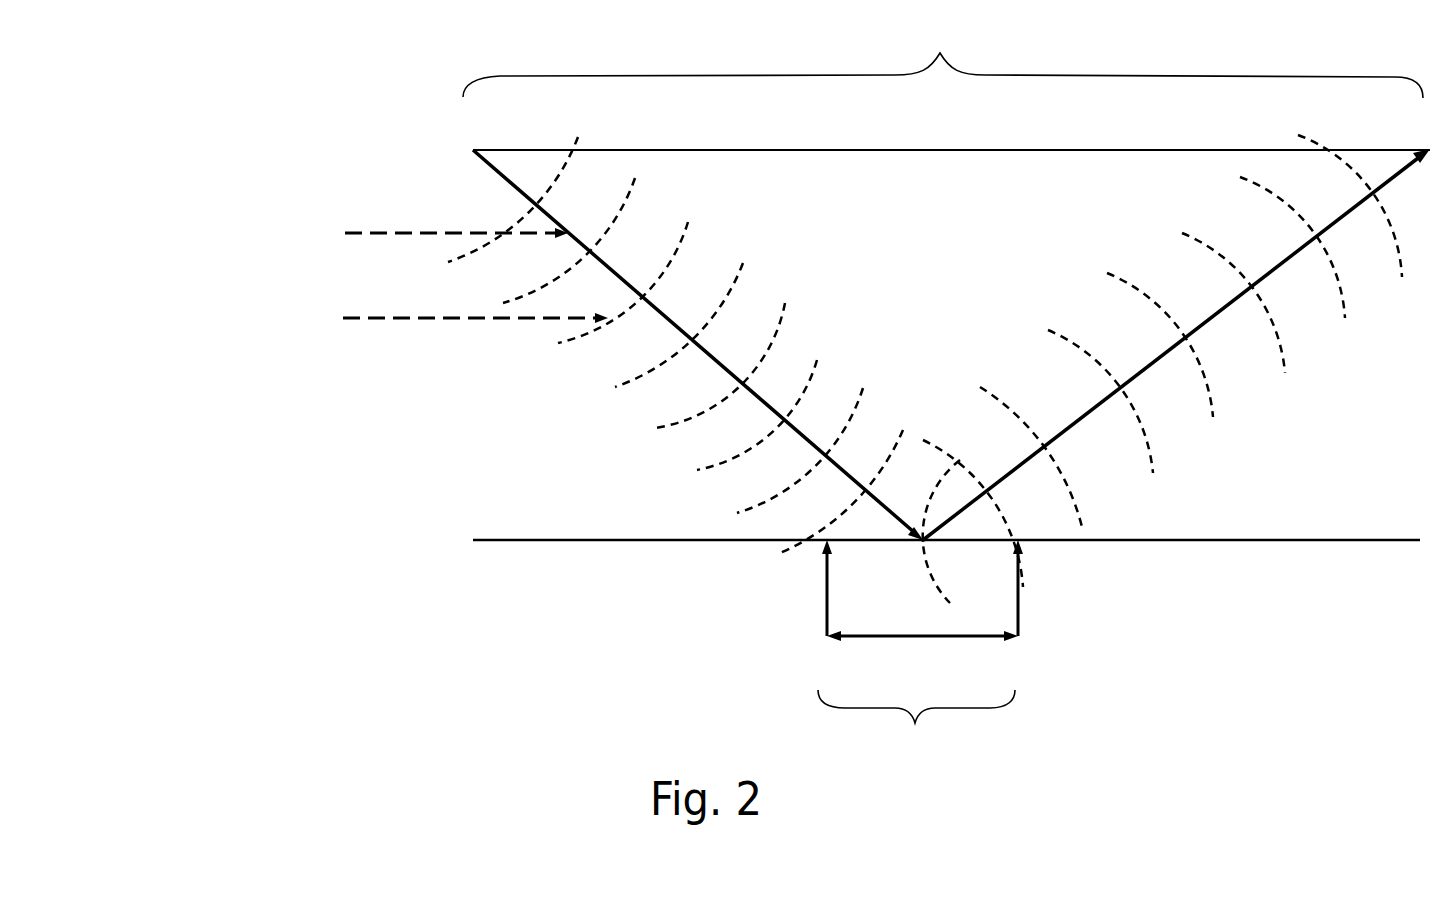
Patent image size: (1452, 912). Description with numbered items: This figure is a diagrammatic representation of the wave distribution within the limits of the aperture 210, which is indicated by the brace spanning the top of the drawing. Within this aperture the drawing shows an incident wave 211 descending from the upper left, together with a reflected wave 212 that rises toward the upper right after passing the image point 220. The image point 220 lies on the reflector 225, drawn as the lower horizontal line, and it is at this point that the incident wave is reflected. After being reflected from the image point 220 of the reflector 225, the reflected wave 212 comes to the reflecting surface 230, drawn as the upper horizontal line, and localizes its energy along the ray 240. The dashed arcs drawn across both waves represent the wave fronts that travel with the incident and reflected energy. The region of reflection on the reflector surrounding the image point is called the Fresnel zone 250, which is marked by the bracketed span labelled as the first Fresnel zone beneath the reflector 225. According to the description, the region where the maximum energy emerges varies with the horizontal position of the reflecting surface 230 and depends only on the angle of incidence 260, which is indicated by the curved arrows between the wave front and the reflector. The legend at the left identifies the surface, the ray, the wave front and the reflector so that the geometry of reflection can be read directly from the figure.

The aperture 210 is at (943, 58).
The incident wave 211 is at (677, 320).
The reflected wave 212 is at (1090, 410).
The image point 220 is at (922, 568).
The reflector 225 is at (450, 540).
The reflecting surface 230 is at (446, 151).
The ray 240 is at (380, 234).
The Fresnel zone 250 is at (912, 653).
The angle of incidence 260 is at (638, 319).